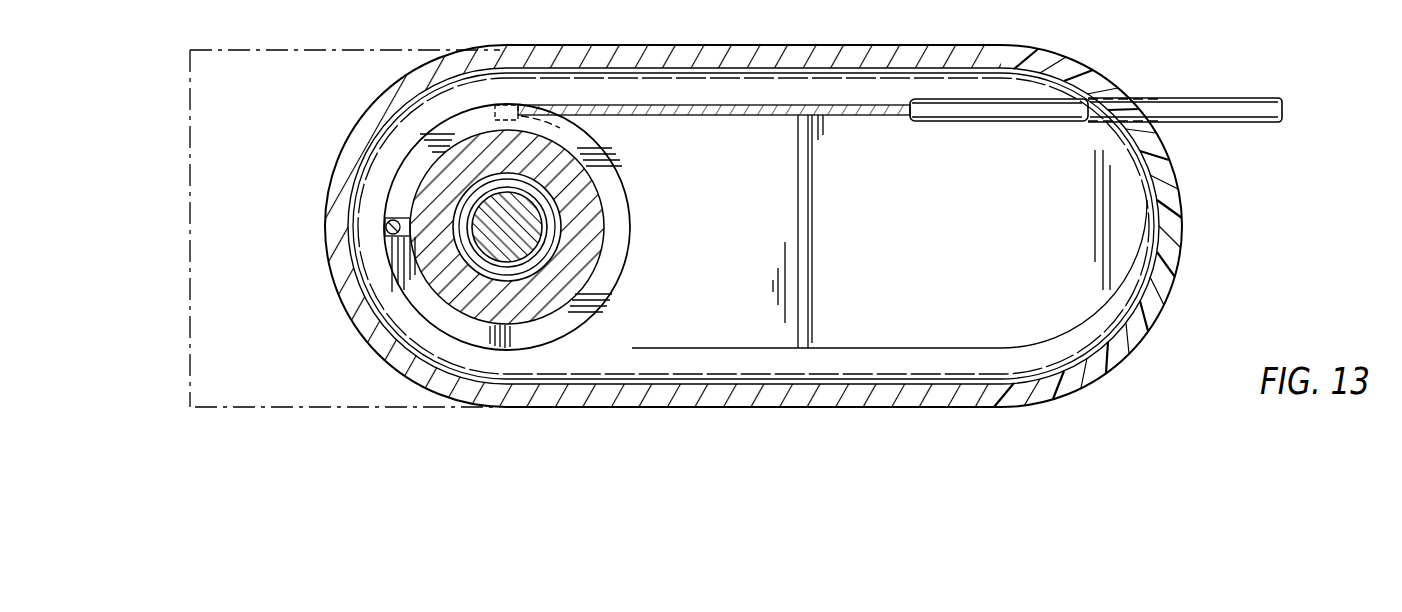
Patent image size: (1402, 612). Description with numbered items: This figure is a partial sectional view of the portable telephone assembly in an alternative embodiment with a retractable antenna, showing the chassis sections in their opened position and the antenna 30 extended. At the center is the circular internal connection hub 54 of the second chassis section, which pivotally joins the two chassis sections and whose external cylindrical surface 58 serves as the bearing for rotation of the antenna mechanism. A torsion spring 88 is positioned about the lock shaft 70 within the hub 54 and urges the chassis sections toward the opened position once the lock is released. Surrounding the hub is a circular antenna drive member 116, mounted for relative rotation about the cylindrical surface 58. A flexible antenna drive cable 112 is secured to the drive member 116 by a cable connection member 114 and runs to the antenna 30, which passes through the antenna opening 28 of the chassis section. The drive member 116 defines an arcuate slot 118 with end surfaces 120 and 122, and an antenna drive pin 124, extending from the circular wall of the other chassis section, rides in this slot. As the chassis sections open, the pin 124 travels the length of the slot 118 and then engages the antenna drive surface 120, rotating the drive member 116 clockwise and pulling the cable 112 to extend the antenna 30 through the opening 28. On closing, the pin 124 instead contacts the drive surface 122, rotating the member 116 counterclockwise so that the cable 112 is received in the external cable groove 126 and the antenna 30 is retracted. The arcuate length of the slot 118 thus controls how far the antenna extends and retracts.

The antenna opening 28 is at (1078, 122).
The antenna 30 is at (1193, 100).
The connection hub 54 is at (432, 265).
The external cylindrical surface 58 is at (427, 137).
The lock shaft 70 is at (545, 240).
The torsion spring 88 is at (553, 220).
The antenna drive cable 112 is at (785, 103).
The cable connection member 114 is at (497, 100).
The antenna drive member 116 is at (607, 303).
The arcuate slot 118 is at (423, 305).
The antenna drive surface 120 is at (387, 230).
The drive surface 122 is at (480, 343).
The antenna drive pin 124 is at (386, 236).
The external cable groove 126 is at (600, 170).